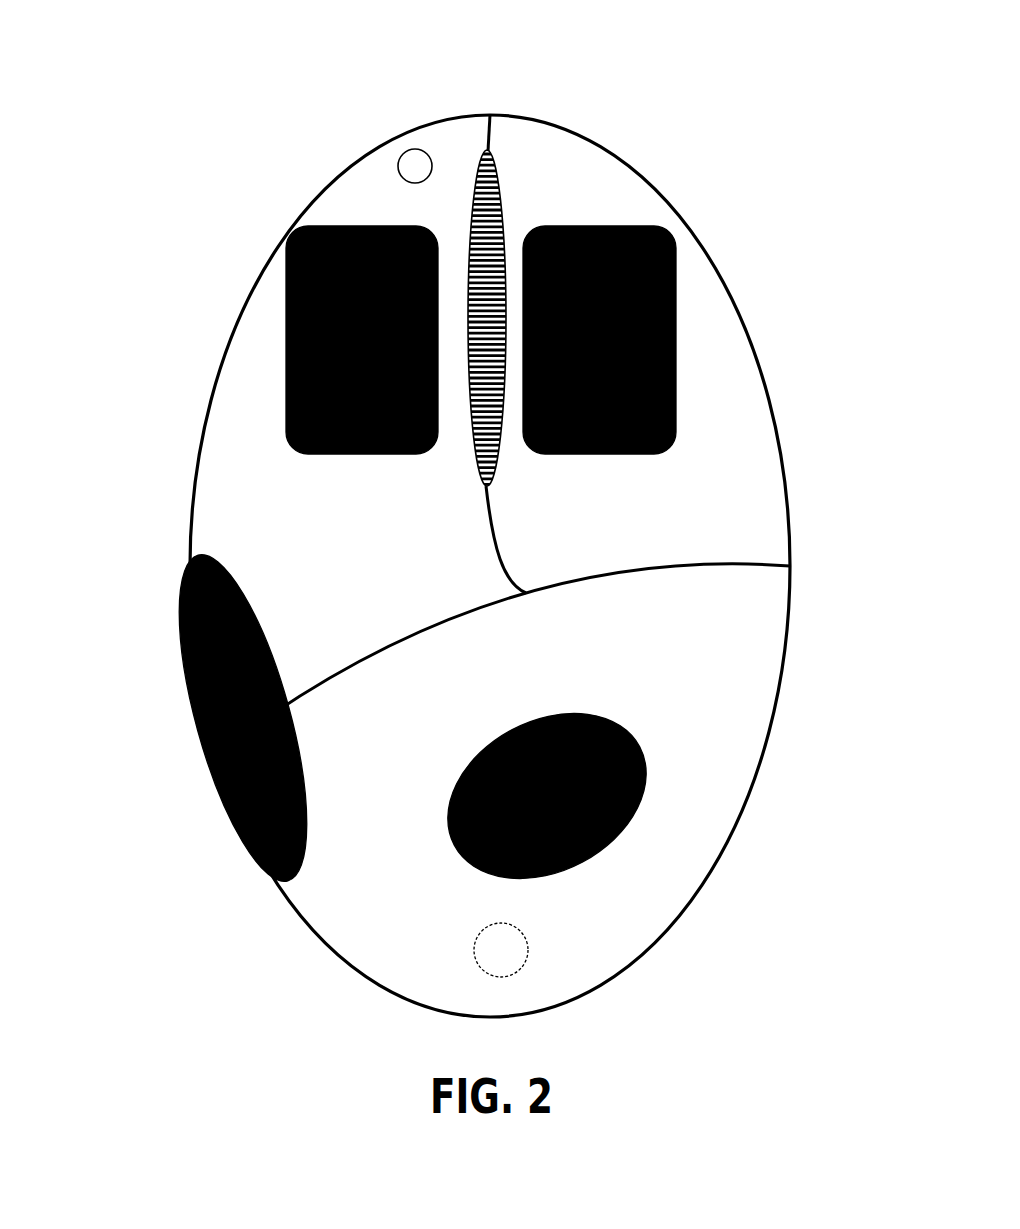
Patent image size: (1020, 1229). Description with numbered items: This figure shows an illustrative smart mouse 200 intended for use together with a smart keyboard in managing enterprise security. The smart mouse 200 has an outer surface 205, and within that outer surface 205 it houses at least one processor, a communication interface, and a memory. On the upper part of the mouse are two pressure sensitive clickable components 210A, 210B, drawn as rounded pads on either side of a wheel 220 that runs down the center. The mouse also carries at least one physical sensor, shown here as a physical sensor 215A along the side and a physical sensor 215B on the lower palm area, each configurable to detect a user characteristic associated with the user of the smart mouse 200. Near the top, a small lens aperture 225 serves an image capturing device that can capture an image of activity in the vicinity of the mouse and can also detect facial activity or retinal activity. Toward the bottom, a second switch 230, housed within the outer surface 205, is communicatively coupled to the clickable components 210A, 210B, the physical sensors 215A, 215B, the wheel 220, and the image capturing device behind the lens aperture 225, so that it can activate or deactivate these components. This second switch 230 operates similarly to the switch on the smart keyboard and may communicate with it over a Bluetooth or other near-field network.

The smart mouse 200 is at (240, 130).
The outer surface 205 is at (762, 525).
The clickable component 210A is at (278, 272).
The clickable component 210B is at (668, 295).
The physical sensor 215A is at (210, 750).
The physical sensor 215B is at (633, 735).
The wheel 220 is at (497, 218).
The lens aperture 225 is at (413, 142).
The second switch 230 is at (520, 942).